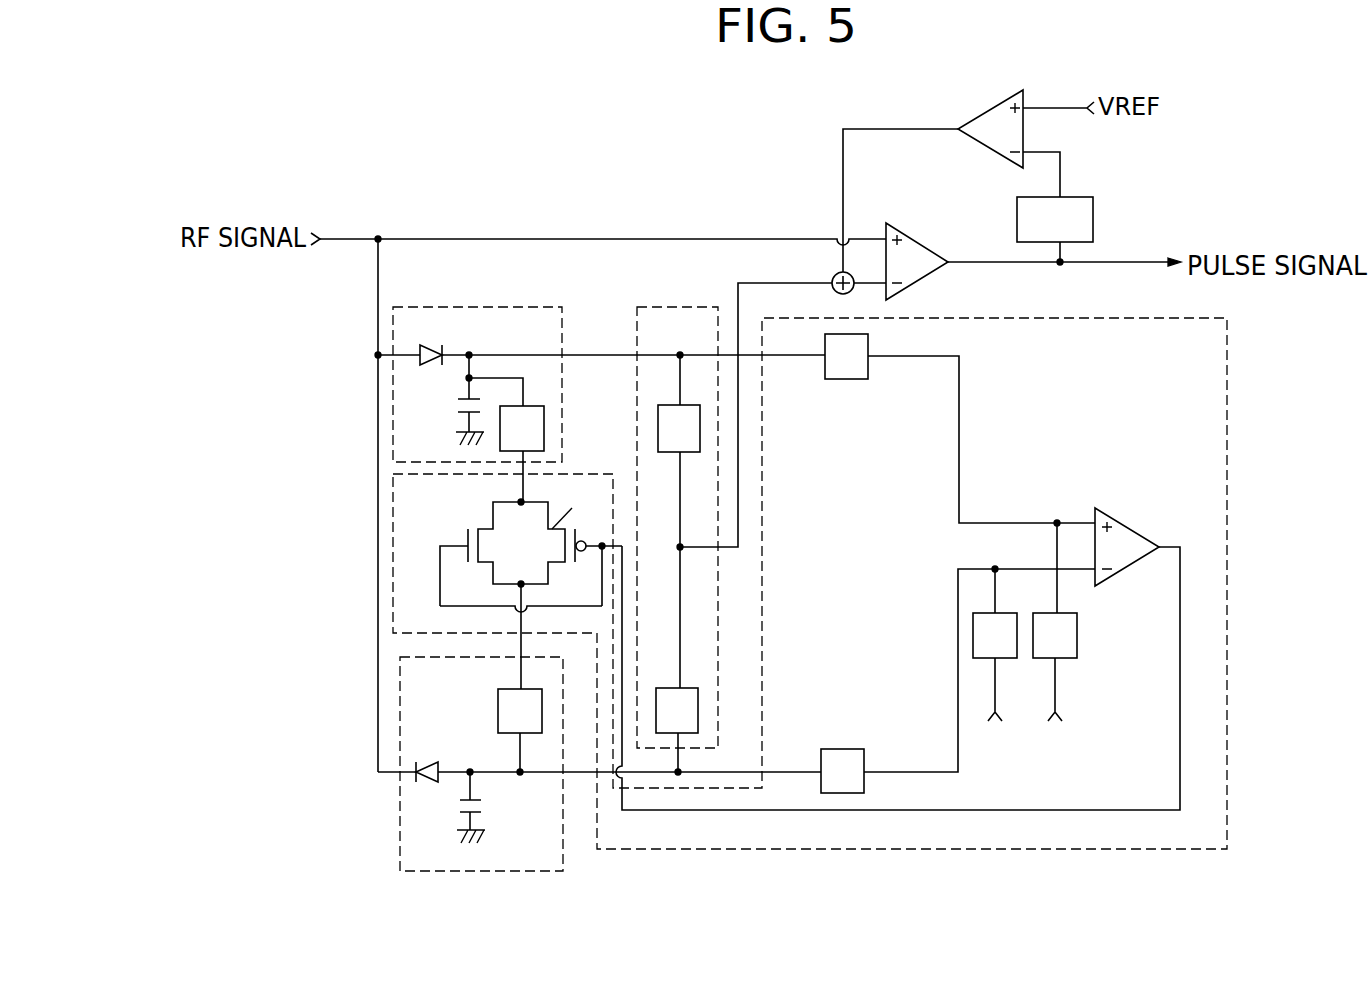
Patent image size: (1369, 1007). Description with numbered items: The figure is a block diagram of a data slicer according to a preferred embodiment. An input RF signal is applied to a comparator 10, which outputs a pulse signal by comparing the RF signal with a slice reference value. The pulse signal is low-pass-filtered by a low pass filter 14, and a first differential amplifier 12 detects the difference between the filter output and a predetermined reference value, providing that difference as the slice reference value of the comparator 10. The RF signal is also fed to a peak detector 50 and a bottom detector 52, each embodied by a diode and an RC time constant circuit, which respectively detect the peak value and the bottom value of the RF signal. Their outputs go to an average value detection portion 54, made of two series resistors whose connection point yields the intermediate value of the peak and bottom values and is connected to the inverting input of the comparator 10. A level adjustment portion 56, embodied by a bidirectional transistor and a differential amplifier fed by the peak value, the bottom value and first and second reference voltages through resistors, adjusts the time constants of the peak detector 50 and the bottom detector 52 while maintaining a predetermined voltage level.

The comparator 10 is at (925, 243).
The first differential amplifier 12 is at (985, 110).
The low pass filter 14 is at (1093, 220).
The peak detector 50 is at (518, 307).
The bottom detector 52 is at (400, 828).
The average value detection portion 54 is at (660, 307).
The level adjustment portion 56 is at (1227, 555).